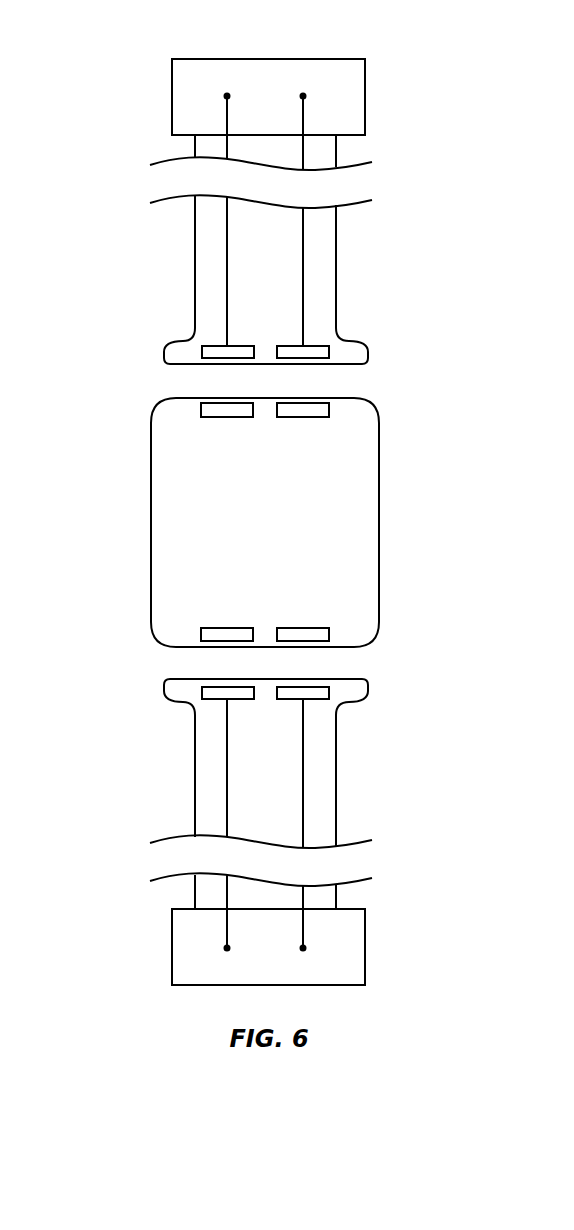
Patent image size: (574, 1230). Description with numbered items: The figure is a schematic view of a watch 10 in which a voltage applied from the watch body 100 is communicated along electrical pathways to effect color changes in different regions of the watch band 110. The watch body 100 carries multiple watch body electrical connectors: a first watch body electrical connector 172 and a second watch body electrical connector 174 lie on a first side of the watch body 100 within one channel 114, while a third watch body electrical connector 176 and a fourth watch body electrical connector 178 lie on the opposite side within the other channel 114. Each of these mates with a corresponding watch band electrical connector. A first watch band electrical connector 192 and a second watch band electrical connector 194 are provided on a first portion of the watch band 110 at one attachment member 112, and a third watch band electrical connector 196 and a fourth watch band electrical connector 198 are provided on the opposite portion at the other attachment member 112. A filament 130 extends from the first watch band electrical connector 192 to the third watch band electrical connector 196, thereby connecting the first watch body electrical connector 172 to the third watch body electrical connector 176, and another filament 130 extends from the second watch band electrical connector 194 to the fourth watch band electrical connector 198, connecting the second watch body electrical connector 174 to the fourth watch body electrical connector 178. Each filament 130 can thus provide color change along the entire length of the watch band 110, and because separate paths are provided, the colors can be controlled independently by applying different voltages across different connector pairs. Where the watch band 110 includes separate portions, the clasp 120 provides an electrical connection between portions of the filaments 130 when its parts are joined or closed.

The electrical connector assembly 10 is at (57, 105).
The watch body 100 is at (151, 518).
The watch band 110 is at (195, 258).
The attachment member 112 is at (164, 352).
The channel 114 is at (380, 402).
The clasp 120 is at (365, 100).
The filament 130 is at (227, 237).
The first watch body electrical connector 172 is at (226, 417).
The second watch body electrical connector 174 is at (303, 417).
The third watch body electrical connector 176 is at (230, 628).
The fourth watch body electrical connector 178 is at (305, 628).
The first watch band electrical connector 192 is at (218, 346).
The second watch band electrical connector 194 is at (310, 346).
The third watch band electrical connector 196 is at (232, 699).
The fourth watch band electrical connector 198 is at (295, 699).